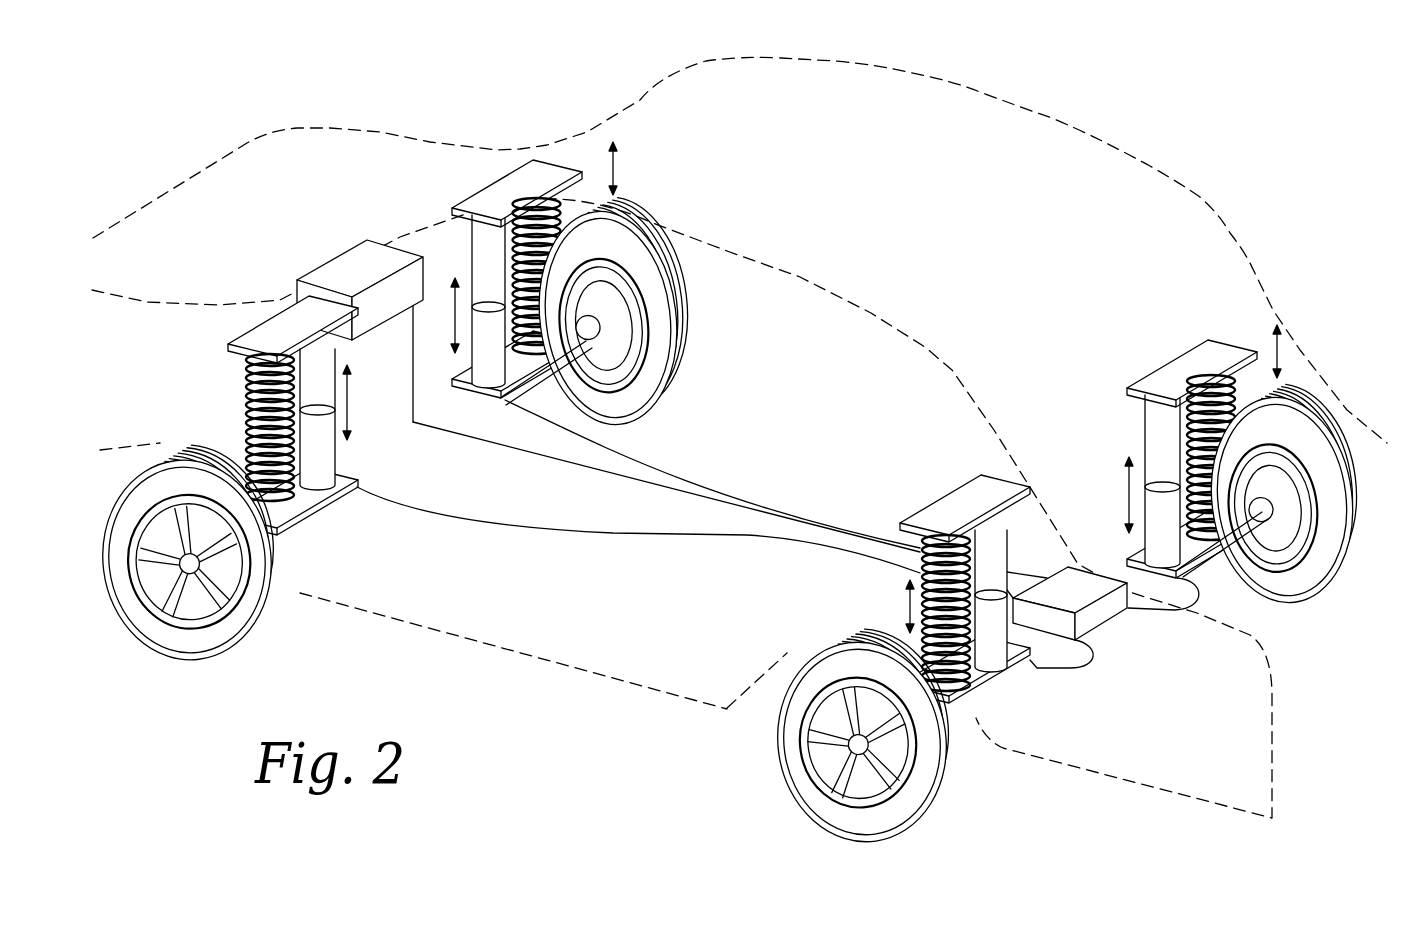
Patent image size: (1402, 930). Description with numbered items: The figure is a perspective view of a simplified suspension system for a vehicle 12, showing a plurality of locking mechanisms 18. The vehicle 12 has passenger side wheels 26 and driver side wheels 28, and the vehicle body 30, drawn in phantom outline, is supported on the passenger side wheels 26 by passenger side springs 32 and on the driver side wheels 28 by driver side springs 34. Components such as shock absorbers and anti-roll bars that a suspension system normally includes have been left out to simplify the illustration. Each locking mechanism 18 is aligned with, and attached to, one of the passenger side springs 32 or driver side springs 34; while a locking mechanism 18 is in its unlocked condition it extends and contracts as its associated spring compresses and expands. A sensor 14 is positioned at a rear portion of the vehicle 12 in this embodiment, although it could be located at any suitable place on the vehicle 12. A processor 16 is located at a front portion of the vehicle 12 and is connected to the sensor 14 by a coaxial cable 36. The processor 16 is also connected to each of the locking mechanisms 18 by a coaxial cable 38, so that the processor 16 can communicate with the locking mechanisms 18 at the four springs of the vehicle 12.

The vehicle 12 is at (480, 650).
The sensor 14 is at (355, 250).
The processor 16 is at (1104, 614).
The locking mechanisms 18 is at (332, 447).
The passenger side wheels 26 is at (161, 632).
The driver side wheels 28 is at (703, 318).
The vehicle body 30 is at (250, 140).
The passenger side springs 32 is at (250, 400).
The driver side springs 34 is at (578, 198).
The coaxial cable 36 is at (412, 382).
The coaxial cable 38 is at (442, 520).